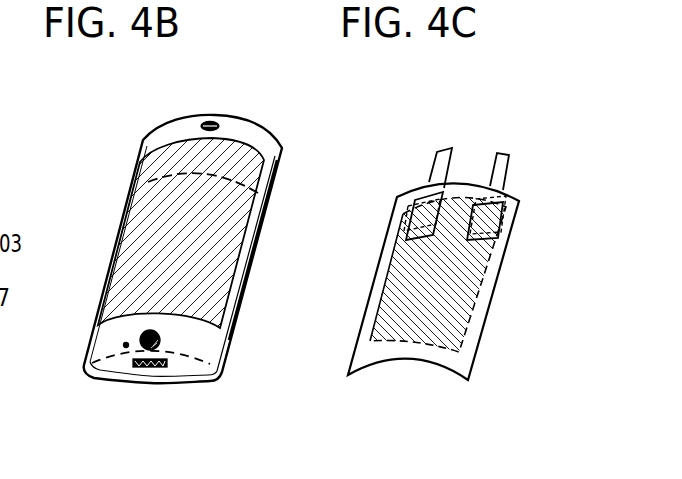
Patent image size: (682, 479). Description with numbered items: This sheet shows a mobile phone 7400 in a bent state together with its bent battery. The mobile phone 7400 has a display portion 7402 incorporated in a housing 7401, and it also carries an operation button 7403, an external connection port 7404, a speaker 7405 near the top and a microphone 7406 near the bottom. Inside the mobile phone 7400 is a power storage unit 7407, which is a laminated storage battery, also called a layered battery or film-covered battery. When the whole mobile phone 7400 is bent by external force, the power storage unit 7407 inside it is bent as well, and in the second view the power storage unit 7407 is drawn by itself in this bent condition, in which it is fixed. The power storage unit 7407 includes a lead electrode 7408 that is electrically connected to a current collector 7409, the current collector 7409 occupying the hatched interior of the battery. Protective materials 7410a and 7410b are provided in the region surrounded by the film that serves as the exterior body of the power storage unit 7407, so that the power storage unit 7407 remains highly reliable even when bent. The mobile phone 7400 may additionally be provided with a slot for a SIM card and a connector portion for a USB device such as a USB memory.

In FIG. 4B, the mobile phone 7400 is at (135, 160).
In FIG. 4B, the housing 7401 is at (125, 346).
In FIG. 4B, the display portion 7402 is at (236, 126).
In FIG. 4B, the operation button 7403 is at (273, 197).
In FIG. 4B, the external connection port 7404 is at (157, 368).
In FIG. 4B, the speaker 7405 is at (202, 121).
In FIG. 4B, the microphone 7406 is at (97, 380).
In FIG. 4B, the power storage unit 7407 is at (232, 339).
In FIG. 4C, the power storage unit 7407 is at (383, 360).
In FIG. 4C, the lead electrode 7408 is at (434, 167).
In FIG. 4C, the current collector 7409 is at (395, 266).
In FIG. 4C, the protective material 7410a is at (415, 199).
In FIG. 4C, the protective material 7410b is at (473, 193).